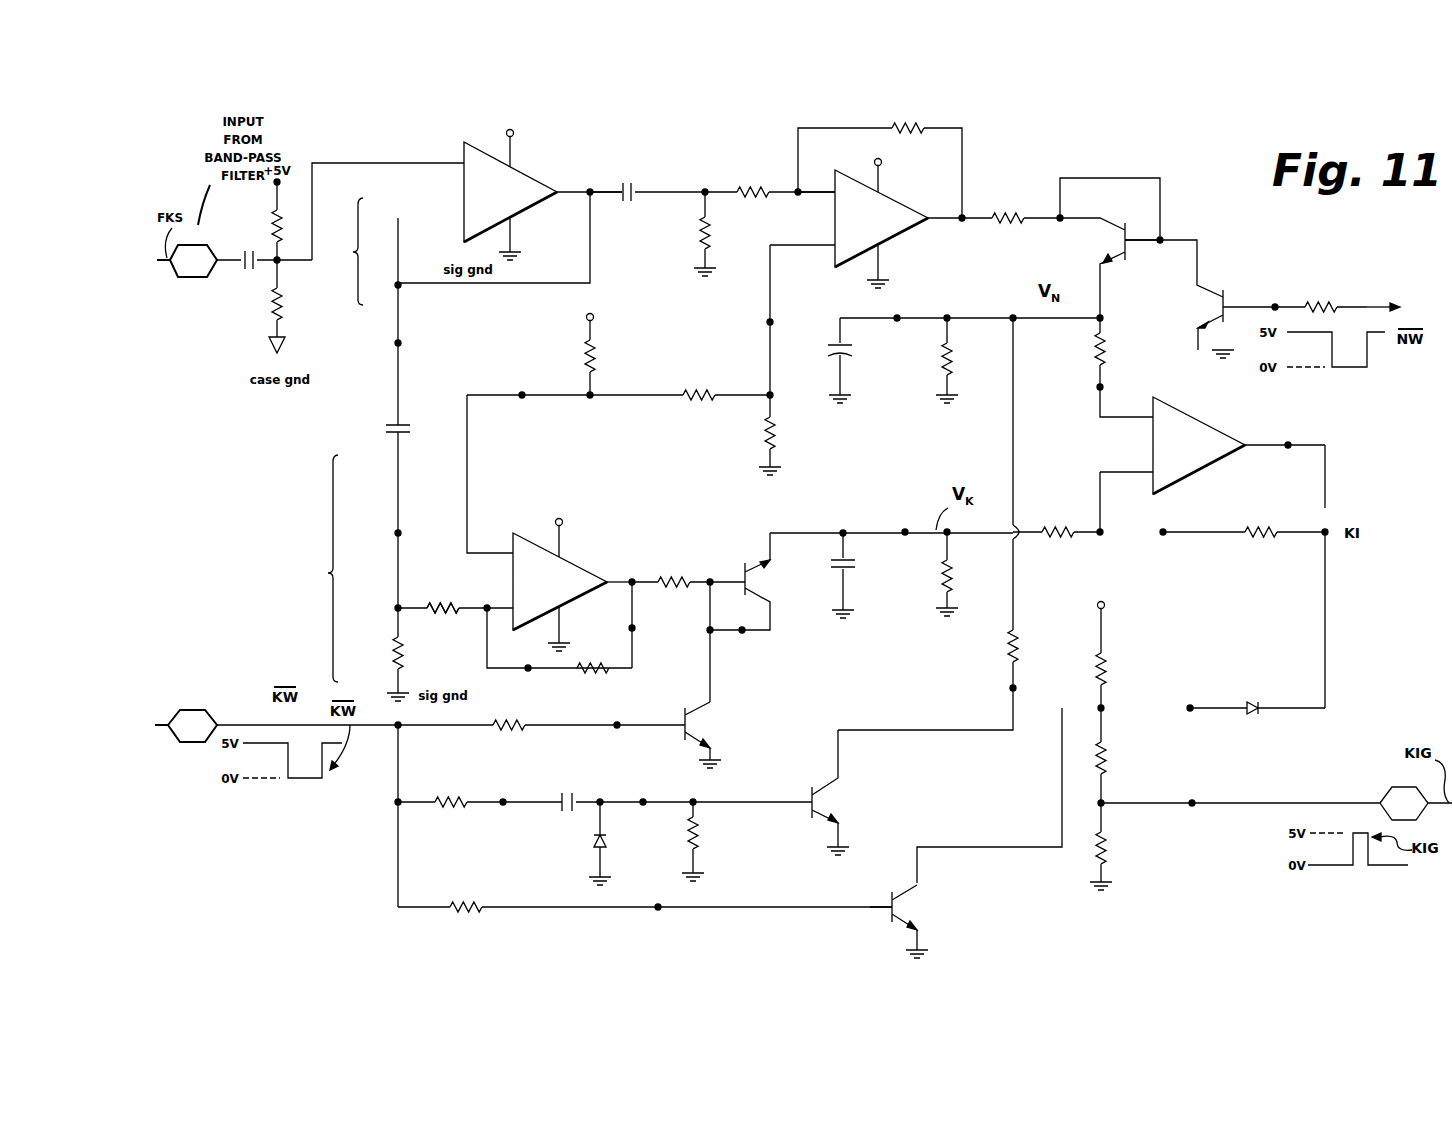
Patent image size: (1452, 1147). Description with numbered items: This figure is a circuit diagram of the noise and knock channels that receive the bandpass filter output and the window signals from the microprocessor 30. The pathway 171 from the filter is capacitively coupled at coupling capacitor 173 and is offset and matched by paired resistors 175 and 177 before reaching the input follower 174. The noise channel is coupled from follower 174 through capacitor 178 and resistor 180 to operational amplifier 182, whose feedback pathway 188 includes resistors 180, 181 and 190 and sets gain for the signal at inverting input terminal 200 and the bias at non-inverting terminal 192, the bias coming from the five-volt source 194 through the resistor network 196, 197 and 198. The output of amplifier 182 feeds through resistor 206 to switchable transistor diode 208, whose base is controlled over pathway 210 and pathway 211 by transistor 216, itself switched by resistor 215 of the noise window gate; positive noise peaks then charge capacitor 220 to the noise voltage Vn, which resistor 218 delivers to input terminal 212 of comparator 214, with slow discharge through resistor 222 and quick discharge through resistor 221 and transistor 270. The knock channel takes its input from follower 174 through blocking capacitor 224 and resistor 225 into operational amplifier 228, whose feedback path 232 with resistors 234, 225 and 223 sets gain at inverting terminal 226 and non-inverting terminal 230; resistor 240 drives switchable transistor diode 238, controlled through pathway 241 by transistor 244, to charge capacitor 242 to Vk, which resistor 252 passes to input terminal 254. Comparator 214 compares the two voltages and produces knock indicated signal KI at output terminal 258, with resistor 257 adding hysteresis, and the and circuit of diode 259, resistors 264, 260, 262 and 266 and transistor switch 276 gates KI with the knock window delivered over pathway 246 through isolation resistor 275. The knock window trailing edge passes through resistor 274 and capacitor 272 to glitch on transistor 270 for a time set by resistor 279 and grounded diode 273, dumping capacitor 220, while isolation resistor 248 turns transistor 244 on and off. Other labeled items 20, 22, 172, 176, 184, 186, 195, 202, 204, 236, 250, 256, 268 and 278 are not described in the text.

The input amplifier stage 20 is at (342, 251).
The knock window gating stage 22 is at (317, 568).
The microprocessor 30 is at (1375, 306).
The pathway 171 is at (370, 162).
The operational amplifier 172 is at (459, 162).
The coupling capacitor 173 is at (245, 272).
The input follower 174 is at (535, 208).
The resistor 175 is at (270, 216).
The feedback line 176 is at (478, 285).
The resistor 177 is at (285, 310).
The capacitor 178 is at (640, 203).
The resistor 180 is at (738, 182).
The resistor 181 is at (697, 240).
The operational amplifier 182 is at (912, 247).
The VCC supply terminal 184 is at (533, 132).
The operational amplifier 186 is at (883, 170).
The feedback pathway 188 is at (962, 134).
The resistor 190 is at (885, 164).
The non-inverting terminal 192 is at (827, 258).
The five-volt source 194 is at (585, 317).
The reference line 195 is at (630, 395).
The resistor 196 is at (718, 395).
The resistor 197 is at (760, 433).
The resistor 198 is at (585, 354).
The inverting input terminal 200 is at (827, 192).
The amplifier output 202 is at (928, 220).
The transistor 204 is at (1100, 227).
The resistor 206 is at (1018, 213).
The transistor diode 208 is at (1133, 253).
The pathway 210 is at (1108, 178).
The pathway 211 is at (1200, 256).
The input terminal 212 is at (1146, 407).
The comparator 214 is at (1215, 467).
The resistor 215 is at (1325, 301).
The transistor 216 is at (1240, 298).
The resistor 218 is at (1094, 360).
The capacitor 220 is at (855, 352).
The resistor 221 is at (928, 524).
The resistor 222 is at (955, 346).
The resistor 223 is at (392, 645).
The blocking capacitor 224 is at (384, 420).
The resistor 225 is at (443, 620).
The inverting terminal 226 is at (505, 605).
The operational amplifier 228 is at (580, 558).
The non-inverting terminal 230 is at (503, 550).
The feedback path 232 is at (633, 650).
The resistor 234 is at (575, 670).
The amplifier output 236 is at (608, 582).
The transistor diode 238 is at (740, 572).
The resistor 240 is at (672, 572).
The pathway 241 is at (712, 682).
The capacitor 242 is at (852, 557).
The transistor 244 is at (682, 738).
The pathway 246 is at (377, 727).
The isolation resistor 248 is at (525, 730).
The resistor 250 is at (938, 558).
The resistor 252 is at (1063, 530).
The input terminal 254 is at (1145, 474).
The comparator output 256 is at (1243, 450).
The resistor 257 is at (1267, 545).
The output terminal 258 is at (1317, 445).
The diode 259 is at (1250, 702).
The resistor 260 is at (1108, 670).
The resistor 262 is at (1108, 757).
The resistor 264 is at (1107, 607).
The resistor 266 is at (1115, 847).
The knock output line 268 is at (1215, 801).
The transistor 270 is at (822, 778).
The capacitor 272 is at (555, 815).
The grounded diode 273 is at (608, 842).
The resistor 274 is at (470, 811).
The isolation resistor 275 is at (485, 907).
The transistor switch 276 is at (908, 883).
The connection line 278 is at (1030, 850).
The resistor 279 is at (701, 838).